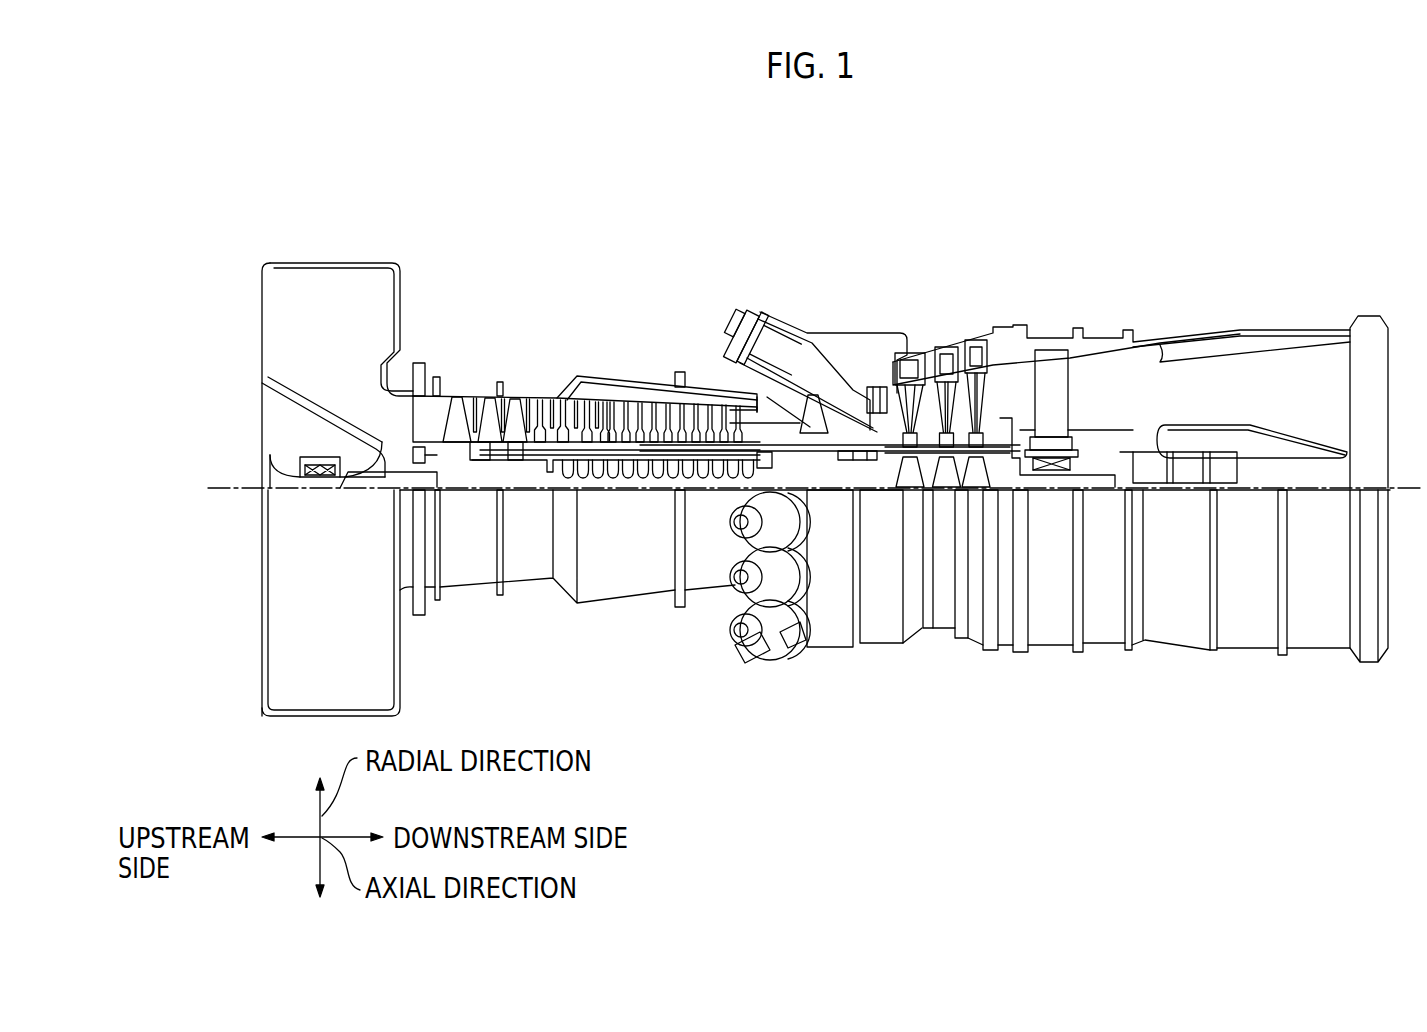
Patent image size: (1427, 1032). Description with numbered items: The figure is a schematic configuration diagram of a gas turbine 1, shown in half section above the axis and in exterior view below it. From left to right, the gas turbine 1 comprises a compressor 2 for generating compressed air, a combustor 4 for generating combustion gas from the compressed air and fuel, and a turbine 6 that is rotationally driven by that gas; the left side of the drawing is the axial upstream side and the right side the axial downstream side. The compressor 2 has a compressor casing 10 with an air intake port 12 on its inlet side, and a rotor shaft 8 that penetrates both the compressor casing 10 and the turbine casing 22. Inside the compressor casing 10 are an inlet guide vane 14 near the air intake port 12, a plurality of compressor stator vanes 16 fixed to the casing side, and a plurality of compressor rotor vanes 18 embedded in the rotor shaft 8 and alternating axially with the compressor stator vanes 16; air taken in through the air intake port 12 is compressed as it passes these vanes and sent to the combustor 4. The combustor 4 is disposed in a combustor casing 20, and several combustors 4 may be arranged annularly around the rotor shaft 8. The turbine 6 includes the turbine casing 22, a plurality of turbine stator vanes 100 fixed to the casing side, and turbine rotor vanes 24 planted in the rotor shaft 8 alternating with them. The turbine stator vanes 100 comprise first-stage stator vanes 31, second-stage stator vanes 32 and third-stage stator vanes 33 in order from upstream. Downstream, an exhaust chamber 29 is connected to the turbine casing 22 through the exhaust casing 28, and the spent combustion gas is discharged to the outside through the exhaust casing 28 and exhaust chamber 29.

The gas turbine 1 is at (845, 210).
The compressor 2 is at (493, 304).
The combustor 4 is at (768, 303).
The turbine 6 is at (1023, 320).
The rotor shaft 8 is at (795, 442).
The compressor casing 10 is at (487, 412).
The air intake port 12 is at (293, 343).
The inlet guide vane 14 is at (433, 410).
The compressor stator vanes 16 is at (520, 410).
The compressor rotor vanes 18 is at (458, 405).
The combustor casing 20 is at (745, 322).
The turbine casing 22 is at (960, 377).
The turbine rotor vanes 24 is at (887, 400).
The exhaust casing 28 is at (1060, 338).
The exhaust chamber 29 is at (1310, 330).
The turbine stator vanes 100 is at (933, 341).
The first-stage stator vanes 31 is at (912, 388).
The second-stage stator vanes 32 is at (942, 390).
The third-stage stator vanes 33 is at (972, 378).